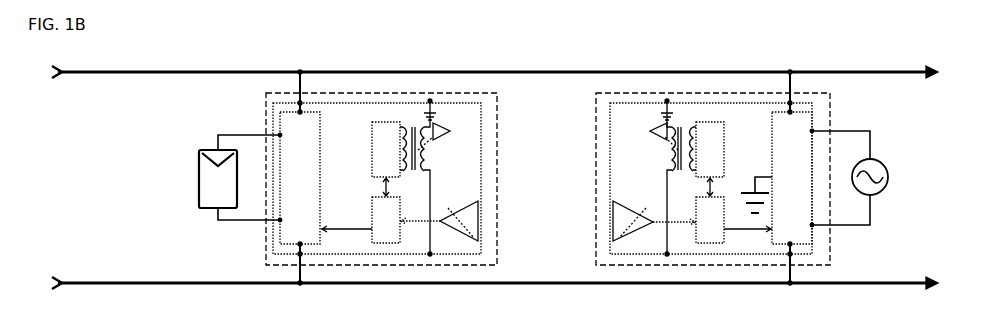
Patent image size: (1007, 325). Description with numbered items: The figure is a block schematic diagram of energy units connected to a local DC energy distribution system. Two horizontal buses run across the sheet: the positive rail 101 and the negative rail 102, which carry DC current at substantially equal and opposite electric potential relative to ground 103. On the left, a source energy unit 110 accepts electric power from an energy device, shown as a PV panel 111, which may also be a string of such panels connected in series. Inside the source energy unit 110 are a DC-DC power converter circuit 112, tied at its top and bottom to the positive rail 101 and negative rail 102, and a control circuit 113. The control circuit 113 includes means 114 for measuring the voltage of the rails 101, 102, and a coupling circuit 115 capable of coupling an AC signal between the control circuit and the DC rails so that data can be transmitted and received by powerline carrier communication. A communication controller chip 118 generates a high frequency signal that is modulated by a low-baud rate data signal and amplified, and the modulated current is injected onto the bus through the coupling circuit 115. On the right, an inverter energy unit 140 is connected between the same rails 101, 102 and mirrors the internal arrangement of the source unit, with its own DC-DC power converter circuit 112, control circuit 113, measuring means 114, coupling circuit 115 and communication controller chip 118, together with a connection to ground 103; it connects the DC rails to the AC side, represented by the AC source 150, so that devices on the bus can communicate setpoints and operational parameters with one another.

The positive rail 101 is at (495, 67).
The negative rail 102 is at (495, 291).
The ground 103 is at (756, 189).
The source energy unit 110 is at (370, 177).
The PV panel 111 is at (240, 177).
The DC-DC power converter circuit 112 is at (546, 178).
The control circuit 113 is at (548, 220).
The means for measuring voltage 114 is at (546, 220).
The coupling circuit 115 is at (550, 131).
The communication controller chip 118 is at (548, 149).
The inverter energy unit 140 is at (701, 177).
The AC power source 150 is at (851, 178).